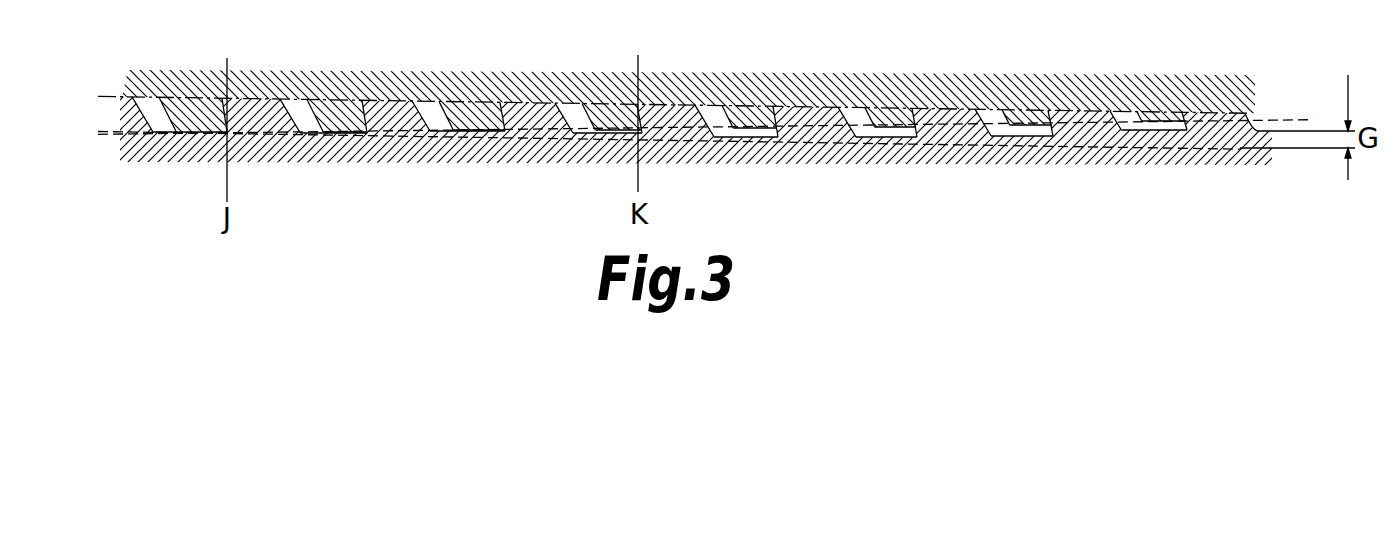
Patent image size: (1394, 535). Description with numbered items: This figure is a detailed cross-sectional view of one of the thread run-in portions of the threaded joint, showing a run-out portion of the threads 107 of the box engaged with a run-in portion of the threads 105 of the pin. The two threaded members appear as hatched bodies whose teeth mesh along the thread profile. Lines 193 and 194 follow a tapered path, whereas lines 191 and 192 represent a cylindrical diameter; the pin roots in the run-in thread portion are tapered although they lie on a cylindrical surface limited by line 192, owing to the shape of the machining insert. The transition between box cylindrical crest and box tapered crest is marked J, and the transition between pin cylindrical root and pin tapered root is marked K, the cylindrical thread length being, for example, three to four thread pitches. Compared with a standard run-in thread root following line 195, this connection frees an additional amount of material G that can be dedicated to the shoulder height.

The threads of pin 105 is at (397, 120).
The threads of box 107 is at (470, 115).
The cylindrical diameter line 191 is at (877, 123).
The cylindrical diameter line 192 is at (940, 135).
The tapered path line 193 is at (103, 137).
The tapered path line 194 is at (523, 137).
The standard run-in thread root line 195 is at (1225, 152).